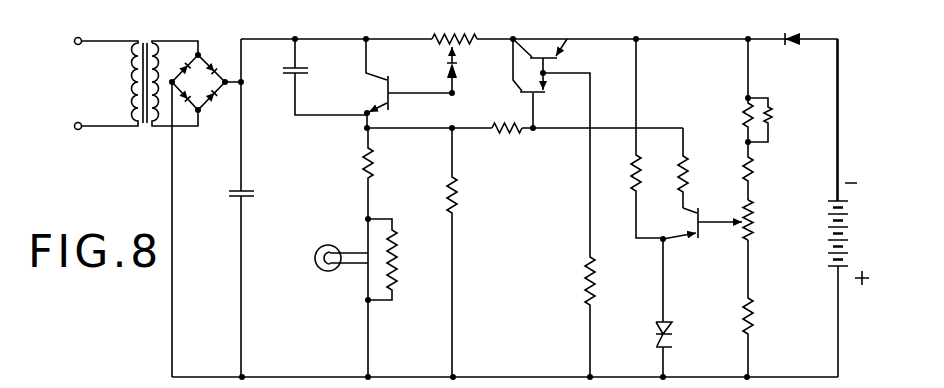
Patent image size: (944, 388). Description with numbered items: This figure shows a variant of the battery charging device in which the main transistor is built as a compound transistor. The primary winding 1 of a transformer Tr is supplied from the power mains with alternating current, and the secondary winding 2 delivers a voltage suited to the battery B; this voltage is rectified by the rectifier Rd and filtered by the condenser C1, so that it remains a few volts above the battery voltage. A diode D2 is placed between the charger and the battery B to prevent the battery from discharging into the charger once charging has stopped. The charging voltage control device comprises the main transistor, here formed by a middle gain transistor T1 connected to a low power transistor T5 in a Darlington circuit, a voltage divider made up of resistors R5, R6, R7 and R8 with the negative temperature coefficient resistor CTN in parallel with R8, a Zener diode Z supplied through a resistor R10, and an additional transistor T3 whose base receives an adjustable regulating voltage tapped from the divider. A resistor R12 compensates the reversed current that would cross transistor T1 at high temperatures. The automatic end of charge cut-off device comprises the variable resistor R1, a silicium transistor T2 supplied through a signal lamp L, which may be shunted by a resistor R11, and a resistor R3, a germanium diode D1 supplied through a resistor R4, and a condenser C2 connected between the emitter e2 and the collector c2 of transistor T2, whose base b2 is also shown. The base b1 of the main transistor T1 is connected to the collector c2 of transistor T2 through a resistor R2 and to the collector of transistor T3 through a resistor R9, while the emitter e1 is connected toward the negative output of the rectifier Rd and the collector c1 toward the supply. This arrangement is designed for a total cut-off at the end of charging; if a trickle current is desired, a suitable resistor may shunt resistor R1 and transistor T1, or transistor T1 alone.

The primary winding 1 is at (135, 62).
The secondary winding 2 is at (158, 42).
The transformer Tr is at (139, 16).
The rectifier Rd is at (209, 114).
The condenser C1 is at (233, 198).
The condenser C2 is at (308, 67).
The silicium transistor T2 is at (398, 86).
The collector of transistor T2 c2 is at (389, 65).
The emitter of transistor T2 e2 is at (376, 103).
The base of transistor T2 b2 is at (393, 100).
The variable resistor R1 is at (458, 33).
The germanium diode D1 is at (457, 72).
The resistor R2 is at (506, 133).
The resistor R3 is at (365, 163).
The resistor R11 is at (393, 274).
The lamp L is at (316, 263).
The resistor R4 is at (452, 208).
The middle gain transistor T1 is at (544, 49).
The collector of transistor T1 c1 is at (522, 36).
The emitter of transistor T1 e1 is at (561, 49).
The base of transistor T1 b1 is at (551, 62).
The low power transistor T5 is at (539, 96).
The resistor R12 is at (593, 292).
The resistor R10 is at (632, 162).
The resistor R9 is at (690, 178).
The additional transistor T3 is at (690, 220).
The Zener diode Z is at (673, 326).
The resistor R8 is at (727, 90).
The resistor with a negative temperature coefficient CTN is at (772, 123).
The resistor R7 is at (753, 169).
The resistor R6 is at (752, 236).
The resistor R5 is at (752, 329).
The diode D2 is at (788, 32).
The battery B is at (847, 224).